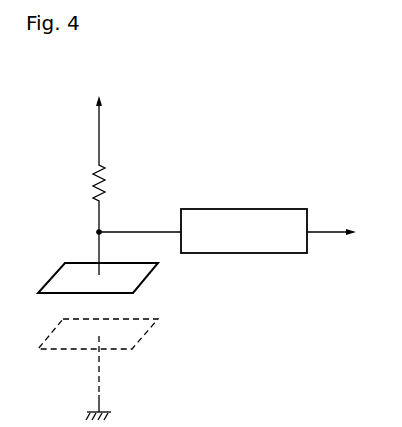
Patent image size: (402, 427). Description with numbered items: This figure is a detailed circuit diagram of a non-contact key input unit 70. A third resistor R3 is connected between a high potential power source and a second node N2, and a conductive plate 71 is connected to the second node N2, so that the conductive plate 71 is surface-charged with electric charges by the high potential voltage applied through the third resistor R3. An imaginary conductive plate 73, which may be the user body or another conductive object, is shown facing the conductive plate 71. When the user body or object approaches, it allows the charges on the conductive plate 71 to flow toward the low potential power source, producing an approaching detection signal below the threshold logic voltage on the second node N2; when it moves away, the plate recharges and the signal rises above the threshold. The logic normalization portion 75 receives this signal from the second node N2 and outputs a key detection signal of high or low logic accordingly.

The non-contact key input unit 70 is at (238, 70).
The third resistor R3 is at (112, 182).
The second node N2 is at (95, 232).
The conductive plate 71 is at (148, 281).
The imaginary conductive plate 73 is at (146, 333).
The logic normalization portion 75 is at (240, 253).